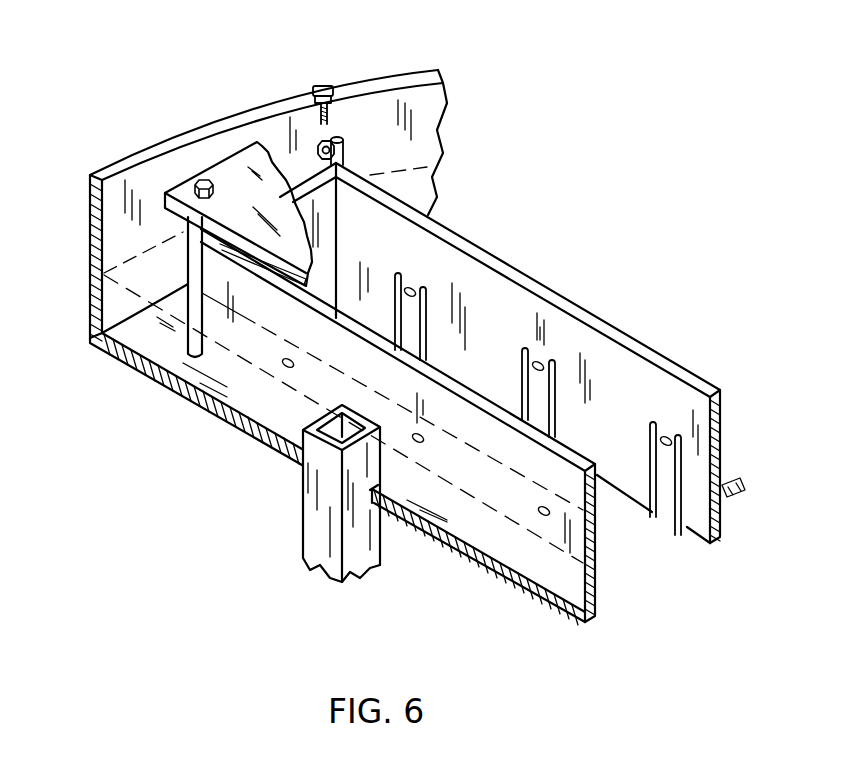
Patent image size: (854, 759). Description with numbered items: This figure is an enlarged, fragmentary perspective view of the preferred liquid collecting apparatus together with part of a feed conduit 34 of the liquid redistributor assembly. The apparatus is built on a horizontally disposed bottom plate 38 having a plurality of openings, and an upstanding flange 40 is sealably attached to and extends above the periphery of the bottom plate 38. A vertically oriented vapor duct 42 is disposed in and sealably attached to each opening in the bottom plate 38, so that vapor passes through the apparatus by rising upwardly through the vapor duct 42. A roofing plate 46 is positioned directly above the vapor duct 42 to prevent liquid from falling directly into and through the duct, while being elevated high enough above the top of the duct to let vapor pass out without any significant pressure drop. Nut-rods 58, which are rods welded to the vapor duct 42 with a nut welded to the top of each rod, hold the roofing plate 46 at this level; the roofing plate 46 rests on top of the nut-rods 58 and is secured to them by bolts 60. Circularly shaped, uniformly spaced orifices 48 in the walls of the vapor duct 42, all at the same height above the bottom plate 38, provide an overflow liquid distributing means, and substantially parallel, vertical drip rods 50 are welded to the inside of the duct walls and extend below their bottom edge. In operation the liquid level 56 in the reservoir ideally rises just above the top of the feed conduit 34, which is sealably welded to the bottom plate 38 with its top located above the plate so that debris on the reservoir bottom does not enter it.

The feed conduit 34 is at (302, 538).
The bottom plate 38 is at (237, 437).
The upstanding flange 40 is at (388, 73).
The vapor duct 42 is at (597, 602).
The roofing plate 46 is at (241, 177).
The orifices 48 is at (667, 440).
The drip rods 50 is at (523, 350).
The liquid level 56 is at (408, 167).
The nut-rods 58 is at (343, 153).
The bolts 60 is at (327, 85).